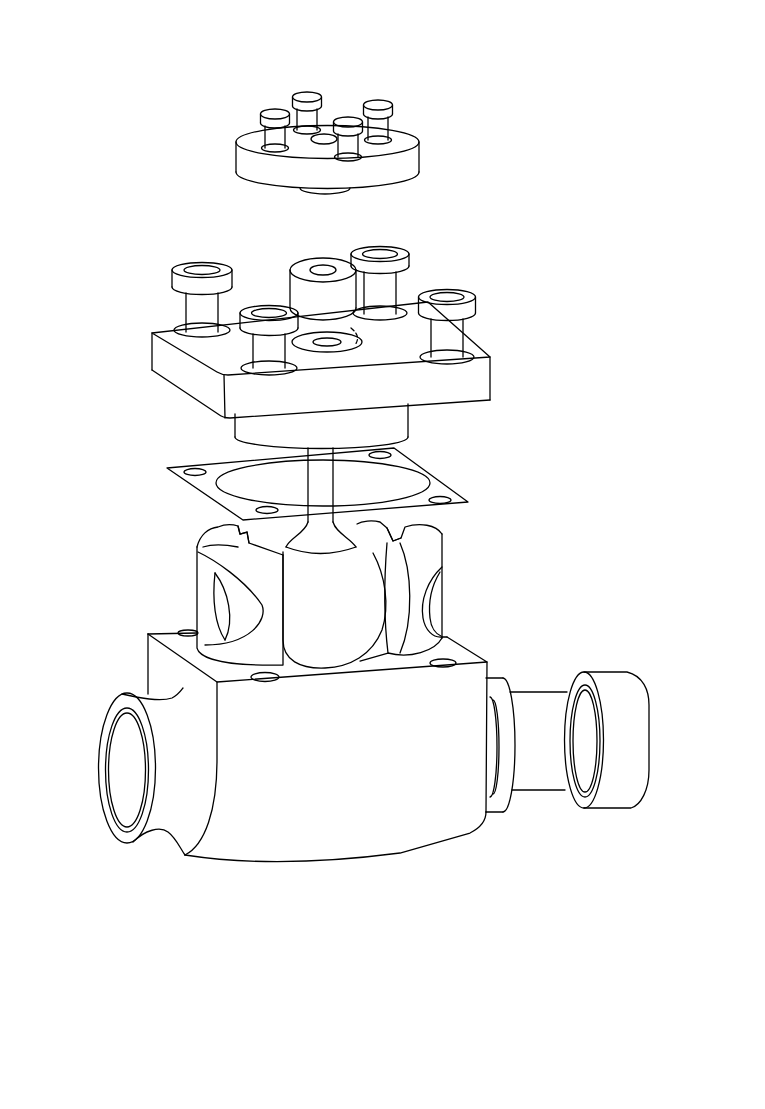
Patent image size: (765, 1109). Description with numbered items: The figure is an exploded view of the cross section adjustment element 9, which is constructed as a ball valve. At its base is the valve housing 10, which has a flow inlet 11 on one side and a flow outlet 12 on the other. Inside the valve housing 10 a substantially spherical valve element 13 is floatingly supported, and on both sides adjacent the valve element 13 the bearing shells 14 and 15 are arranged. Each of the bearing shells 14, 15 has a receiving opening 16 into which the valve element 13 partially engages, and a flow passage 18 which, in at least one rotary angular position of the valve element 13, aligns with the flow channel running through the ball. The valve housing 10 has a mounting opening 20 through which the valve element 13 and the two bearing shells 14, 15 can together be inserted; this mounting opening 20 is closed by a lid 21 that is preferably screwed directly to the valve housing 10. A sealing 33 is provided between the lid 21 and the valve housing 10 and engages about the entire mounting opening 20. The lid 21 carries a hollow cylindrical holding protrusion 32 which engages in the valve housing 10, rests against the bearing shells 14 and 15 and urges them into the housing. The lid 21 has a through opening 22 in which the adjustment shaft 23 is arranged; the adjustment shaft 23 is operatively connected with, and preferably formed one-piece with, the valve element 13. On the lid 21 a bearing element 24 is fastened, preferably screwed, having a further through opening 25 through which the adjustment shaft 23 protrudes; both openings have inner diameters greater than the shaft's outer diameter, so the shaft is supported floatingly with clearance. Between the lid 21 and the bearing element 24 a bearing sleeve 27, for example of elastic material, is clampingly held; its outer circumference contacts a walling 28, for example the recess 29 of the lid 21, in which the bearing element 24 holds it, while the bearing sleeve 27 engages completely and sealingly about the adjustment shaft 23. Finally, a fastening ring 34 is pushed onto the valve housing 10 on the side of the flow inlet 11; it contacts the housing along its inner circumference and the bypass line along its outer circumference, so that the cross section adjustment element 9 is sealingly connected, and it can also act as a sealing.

The cross section adjustment element 9 is at (641, 165).
The valve housing 10 is at (403, 866).
The flow inlet 11 is at (577, 729).
The flow outlet 12 is at (122, 765).
The valve element 13 is at (371, 669).
The bearing shell 14 is at (183, 572).
The bearing shell 15 is at (458, 570).
The receiving opening 16 is at (222, 529).
The flow passage 18 is at (207, 597).
The mounting opening 20 is at (446, 640).
The lid 21 is at (505, 372).
The through opening 22 is at (353, 330).
The adjustment shaft 23 is at (320, 484).
The bearing element 24 is at (430, 150).
The further through opening 25 is at (325, 135).
The bearing sleeve 27 is at (324, 258).
The walling 28 is at (327, 342).
The recess 29 is at (317, 340).
The holding protrusion 32 is at (397, 428).
The sealing 33 is at (166, 466).
The fastening ring 34 is at (613, 792).